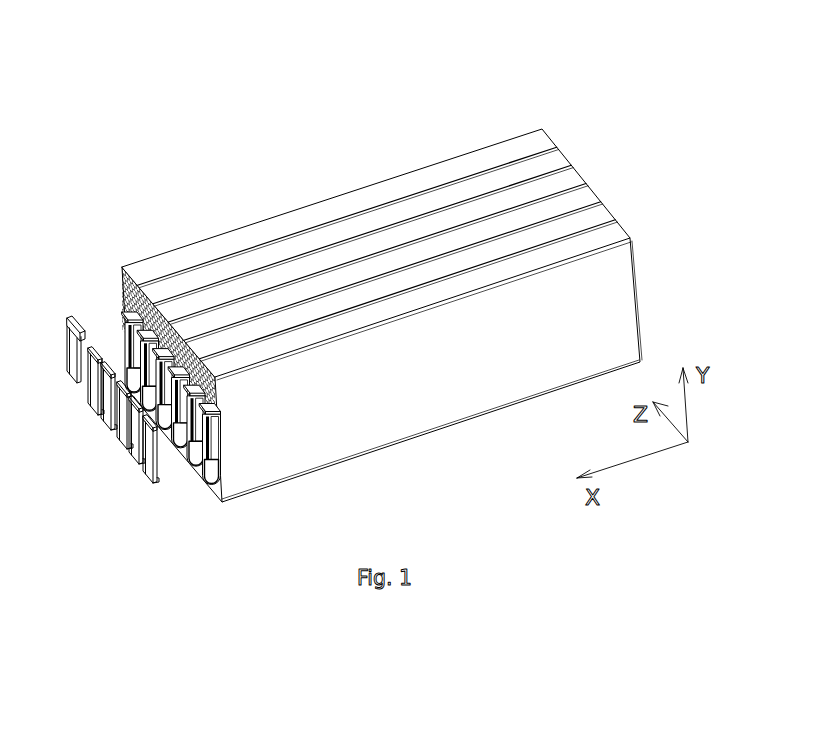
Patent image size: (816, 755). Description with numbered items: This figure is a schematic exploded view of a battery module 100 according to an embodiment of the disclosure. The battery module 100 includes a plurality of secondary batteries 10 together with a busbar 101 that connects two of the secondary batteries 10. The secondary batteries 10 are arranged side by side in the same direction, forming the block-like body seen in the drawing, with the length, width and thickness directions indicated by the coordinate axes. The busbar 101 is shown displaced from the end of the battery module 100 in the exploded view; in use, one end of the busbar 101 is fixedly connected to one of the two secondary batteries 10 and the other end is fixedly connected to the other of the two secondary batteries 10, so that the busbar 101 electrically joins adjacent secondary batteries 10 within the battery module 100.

The battery module 100 is at (383, 39).
The secondary battery 10 is at (345, 200).
The busbar 101 is at (138, 438).